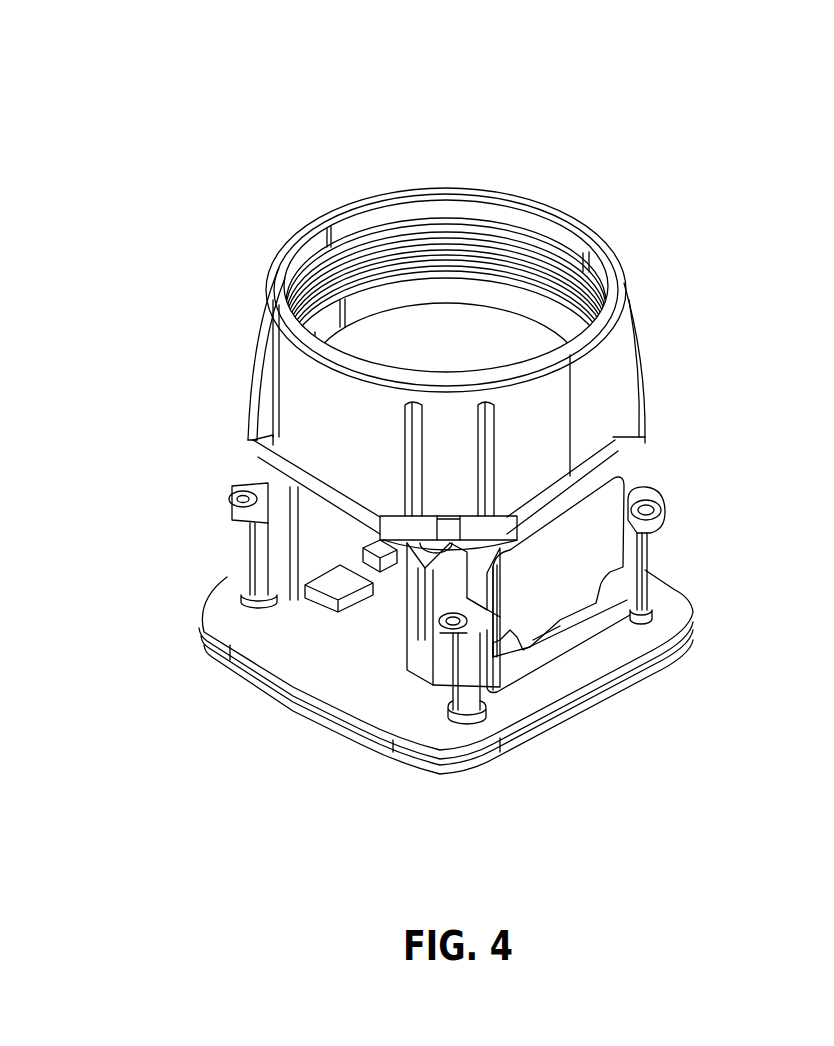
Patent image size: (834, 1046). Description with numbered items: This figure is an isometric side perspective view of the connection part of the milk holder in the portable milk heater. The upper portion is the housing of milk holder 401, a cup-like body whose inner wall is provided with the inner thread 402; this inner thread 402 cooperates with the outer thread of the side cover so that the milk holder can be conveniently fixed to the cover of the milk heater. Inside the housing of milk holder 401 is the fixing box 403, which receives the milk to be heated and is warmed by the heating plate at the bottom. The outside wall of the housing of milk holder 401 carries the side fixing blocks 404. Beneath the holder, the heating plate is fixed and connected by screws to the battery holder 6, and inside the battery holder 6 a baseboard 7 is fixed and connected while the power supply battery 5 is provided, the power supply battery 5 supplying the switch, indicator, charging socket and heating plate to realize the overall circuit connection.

The housing of milk holder 401 is at (580, 395).
The inner thread 402 is at (545, 255).
The fixing box 403 is at (400, 322).
The side fixing blocks 404 is at (258, 400).
The power supply battery 5 is at (587, 558).
The battery holder 6 is at (515, 655).
The baseboard 7 is at (312, 645).